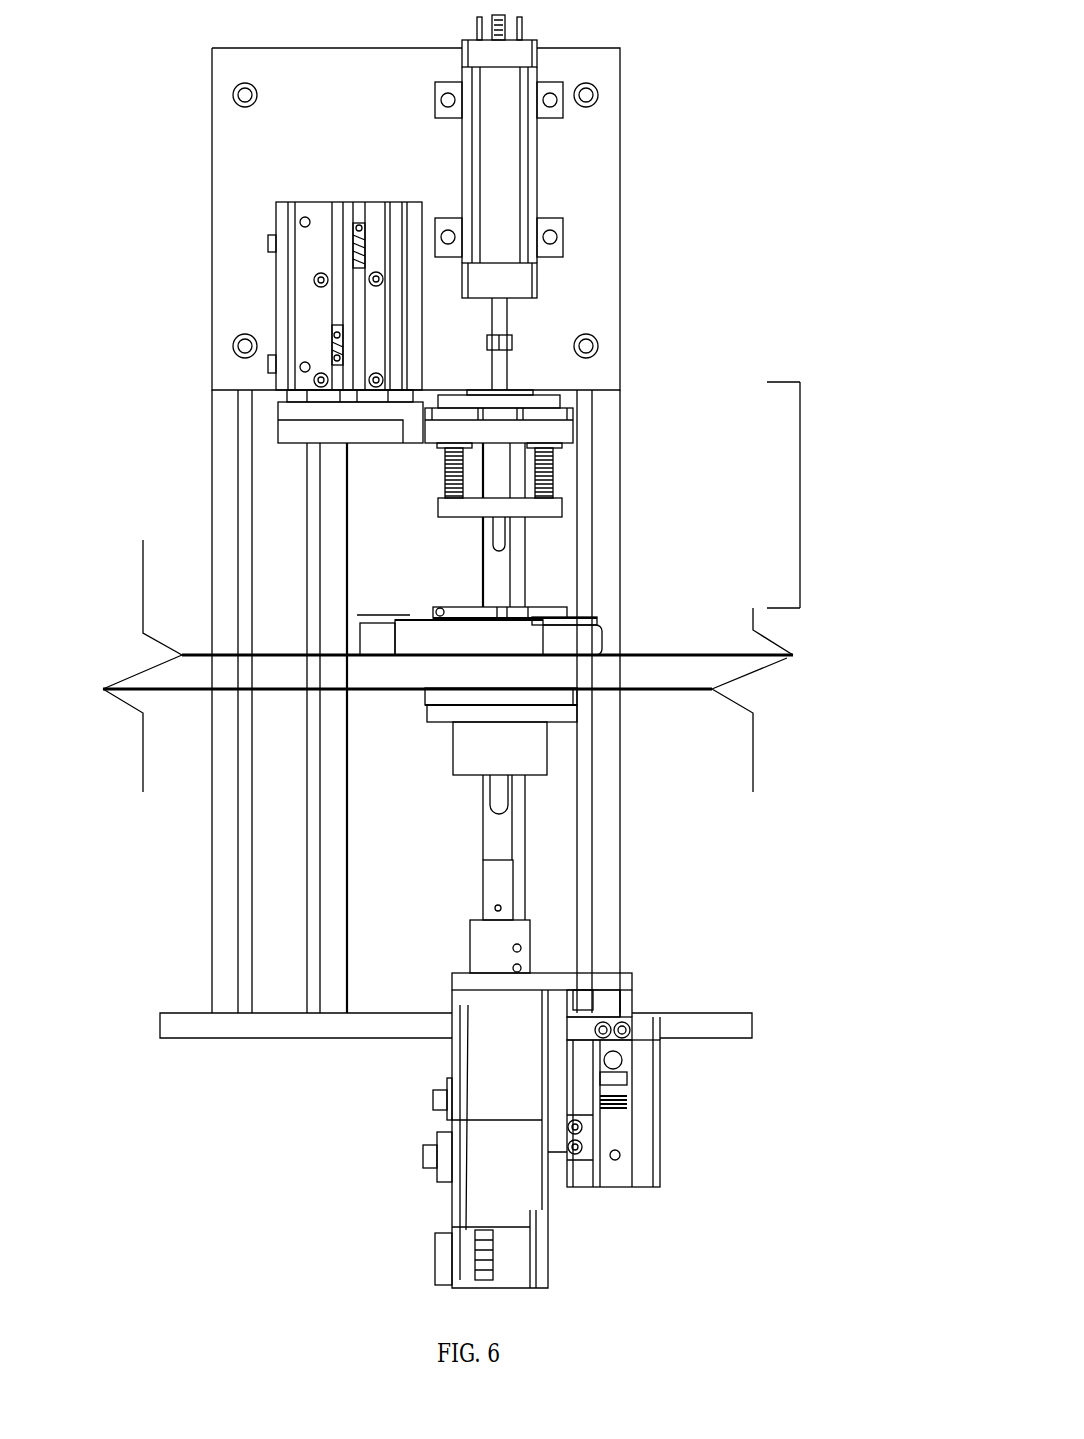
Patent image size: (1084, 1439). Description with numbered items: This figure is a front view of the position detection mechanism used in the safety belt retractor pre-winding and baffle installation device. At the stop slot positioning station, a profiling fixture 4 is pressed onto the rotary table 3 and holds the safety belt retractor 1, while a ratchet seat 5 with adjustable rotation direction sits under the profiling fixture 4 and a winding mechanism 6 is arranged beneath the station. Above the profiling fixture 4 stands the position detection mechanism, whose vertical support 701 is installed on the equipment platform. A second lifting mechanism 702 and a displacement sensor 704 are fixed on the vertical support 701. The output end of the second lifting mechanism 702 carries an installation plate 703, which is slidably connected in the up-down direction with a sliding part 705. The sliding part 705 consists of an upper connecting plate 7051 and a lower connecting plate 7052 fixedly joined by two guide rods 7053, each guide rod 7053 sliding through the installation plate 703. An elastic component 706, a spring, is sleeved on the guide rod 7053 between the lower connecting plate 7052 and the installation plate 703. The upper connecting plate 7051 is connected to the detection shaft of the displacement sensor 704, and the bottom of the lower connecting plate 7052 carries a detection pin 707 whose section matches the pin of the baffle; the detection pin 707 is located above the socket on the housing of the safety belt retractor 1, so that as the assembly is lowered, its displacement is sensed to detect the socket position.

The safety belt retractor 1 is at (460, 607).
The rotary table 3 is at (223, 675).
The profiling fixture 4 is at (393, 635).
The ratchet seat 5 is at (472, 732).
The winding mechanism 6 is at (503, 1048).
The vertical support 701 is at (620, 283).
The second lifting mechanism 702 is at (353, 257).
The installation plate 703 is at (298, 433).
The displacement sensor 704 is at (502, 120).
The sliding part 705 is at (800, 495).
The upper connecting plate 7051 is at (562, 415).
The lower connecting plate 7052 is at (545, 507).
The guide rod 7053 is at (545, 470).
The elastic component 706 is at (457, 473).
The detection pin 707 is at (495, 542).